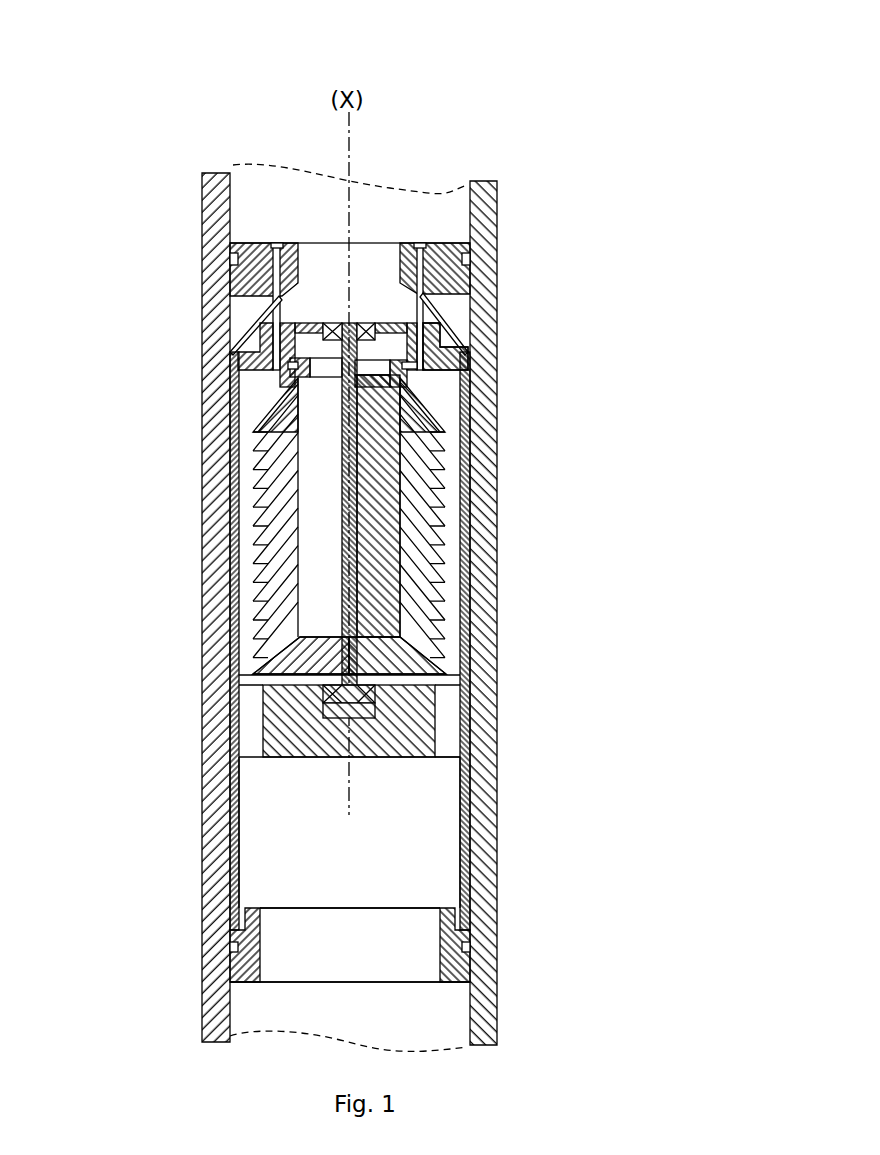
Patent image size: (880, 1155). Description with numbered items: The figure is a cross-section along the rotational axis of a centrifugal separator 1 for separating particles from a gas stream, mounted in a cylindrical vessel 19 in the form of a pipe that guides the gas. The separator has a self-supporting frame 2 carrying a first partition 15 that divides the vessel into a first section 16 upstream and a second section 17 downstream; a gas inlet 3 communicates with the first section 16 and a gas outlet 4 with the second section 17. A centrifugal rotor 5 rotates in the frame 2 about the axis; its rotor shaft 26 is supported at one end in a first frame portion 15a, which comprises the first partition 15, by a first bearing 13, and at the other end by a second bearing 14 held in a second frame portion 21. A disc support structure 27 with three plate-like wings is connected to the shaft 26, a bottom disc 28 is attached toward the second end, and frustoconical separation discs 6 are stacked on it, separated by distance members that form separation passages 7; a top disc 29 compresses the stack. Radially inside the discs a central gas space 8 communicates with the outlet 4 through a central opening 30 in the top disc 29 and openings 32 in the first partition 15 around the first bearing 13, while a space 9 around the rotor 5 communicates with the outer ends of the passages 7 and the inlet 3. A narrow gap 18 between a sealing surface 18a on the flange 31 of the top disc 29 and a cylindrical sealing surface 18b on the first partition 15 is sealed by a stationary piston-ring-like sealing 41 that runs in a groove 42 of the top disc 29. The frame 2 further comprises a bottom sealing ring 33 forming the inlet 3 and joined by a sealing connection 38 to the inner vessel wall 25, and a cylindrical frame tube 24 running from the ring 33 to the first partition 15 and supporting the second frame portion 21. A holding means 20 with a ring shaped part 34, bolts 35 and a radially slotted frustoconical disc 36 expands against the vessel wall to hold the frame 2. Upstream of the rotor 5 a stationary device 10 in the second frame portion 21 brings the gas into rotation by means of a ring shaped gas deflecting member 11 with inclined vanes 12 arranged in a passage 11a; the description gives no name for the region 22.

The centrifugal separator 1 is at (142, 71).
The self-supporting frame 2 is at (234, 371).
The gas inlet 3 is at (353, 947).
The gas outlet 4 is at (290, 243).
The centrifugal rotor 5 is at (453, 537).
The frustoconical separation discs 6 is at (440, 571).
The separation passages 7 is at (375, 625).
The central gas space 8 is at (318, 520).
The space surrounding the rotor 9 is at (248, 550).
The stationary device for bringing the gas stream in rotation 10 is at (453, 697).
The ring shaped gas deflecting member 11 is at (448, 745).
The passage 11a is at (252, 717).
The vanes 12 is at (447, 758).
The first bearing 13 is at (397, 272).
The second bearing 14 is at (332, 696).
The first partition 15 is at (564, 294).
The first frame portion 15a is at (428, 326).
The first section 16 is at (393, 363).
The second section 17 is at (378, 210).
The narrow gap 18 is at (465, 352).
The sealing surface 18a is at (481, 324).
The cylindrical sealing surface 18b is at (418, 347).
The cylindrical vessel 19 is at (215, 241).
The holding means 20 is at (242, 314).
The second frame portion 21 is at (283, 743).
The chamber 22 is at (268, 855).
The cylindrical frame tube 24 is at (235, 586).
The inner vessel wall 25 is at (236, 205).
The rotor shaft 26 is at (347, 660).
The disc support structure 27 is at (402, 652).
The bottom disc 28 is at (447, 662).
The top disc 29 is at (447, 395).
The central opening 30 is at (385, 395).
The flange 31 is at (290, 367).
The openings 32 is at (468, 260).
The bottom sealing ring 33 is at (245, 965).
The ring shaped part 34 is at (240, 270).
The bolts 35 is at (275, 300).
The radially slotted frustoconical disc 36 is at (247, 333).
The sealing connection 38 is at (237, 947).
The ring-formed sealing 41 is at (320, 290).
The groove 42 is at (370, 320).